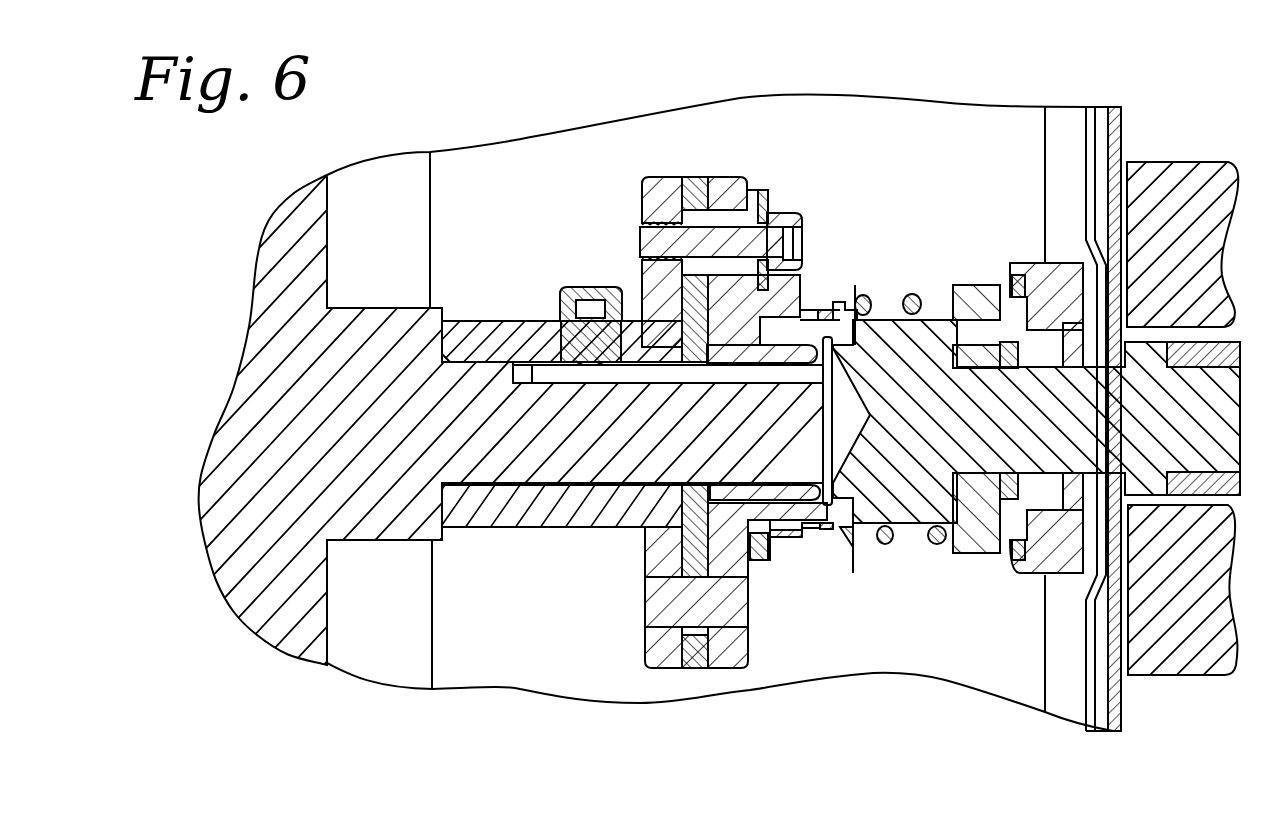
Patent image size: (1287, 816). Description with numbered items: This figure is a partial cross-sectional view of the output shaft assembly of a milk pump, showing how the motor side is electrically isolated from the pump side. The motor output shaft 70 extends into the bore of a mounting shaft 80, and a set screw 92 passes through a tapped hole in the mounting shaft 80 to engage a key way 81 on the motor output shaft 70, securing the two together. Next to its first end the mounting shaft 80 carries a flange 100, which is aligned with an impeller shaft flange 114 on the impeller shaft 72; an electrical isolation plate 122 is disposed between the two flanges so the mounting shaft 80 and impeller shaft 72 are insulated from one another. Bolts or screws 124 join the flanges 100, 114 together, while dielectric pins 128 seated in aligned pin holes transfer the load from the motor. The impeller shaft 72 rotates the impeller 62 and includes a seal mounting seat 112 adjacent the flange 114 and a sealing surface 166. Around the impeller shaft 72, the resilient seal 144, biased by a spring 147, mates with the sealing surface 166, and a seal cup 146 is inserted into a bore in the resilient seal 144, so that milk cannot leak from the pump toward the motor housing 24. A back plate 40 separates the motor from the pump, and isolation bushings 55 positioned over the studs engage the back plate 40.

The motor housing 24 is at (418, 655).
The back plate 40 is at (1110, 172).
The isolation bushings 55 is at (757, 215).
The impeller 62 is at (1192, 586).
The motor output shaft 70 is at (556, 470).
The impeller shaft 72 is at (990, 446).
The mounting shaft 80 is at (457, 315).
The key way 81 is at (550, 373).
The set screw 92 is at (563, 290).
The flange 100 is at (657, 182).
The seal mounting seat 112 is at (840, 510).
The impeller shaft flange 114 is at (735, 178).
The electrical isolation plate 122 is at (688, 178).
The bolts or screws 124 is at (795, 217).
The pins 128 is at (740, 612).
The resilient seal 144 is at (970, 545).
The seal cup 146 is at (1040, 548).
The spring 147 is at (928, 300).
The sealing surface 166 is at (912, 513).